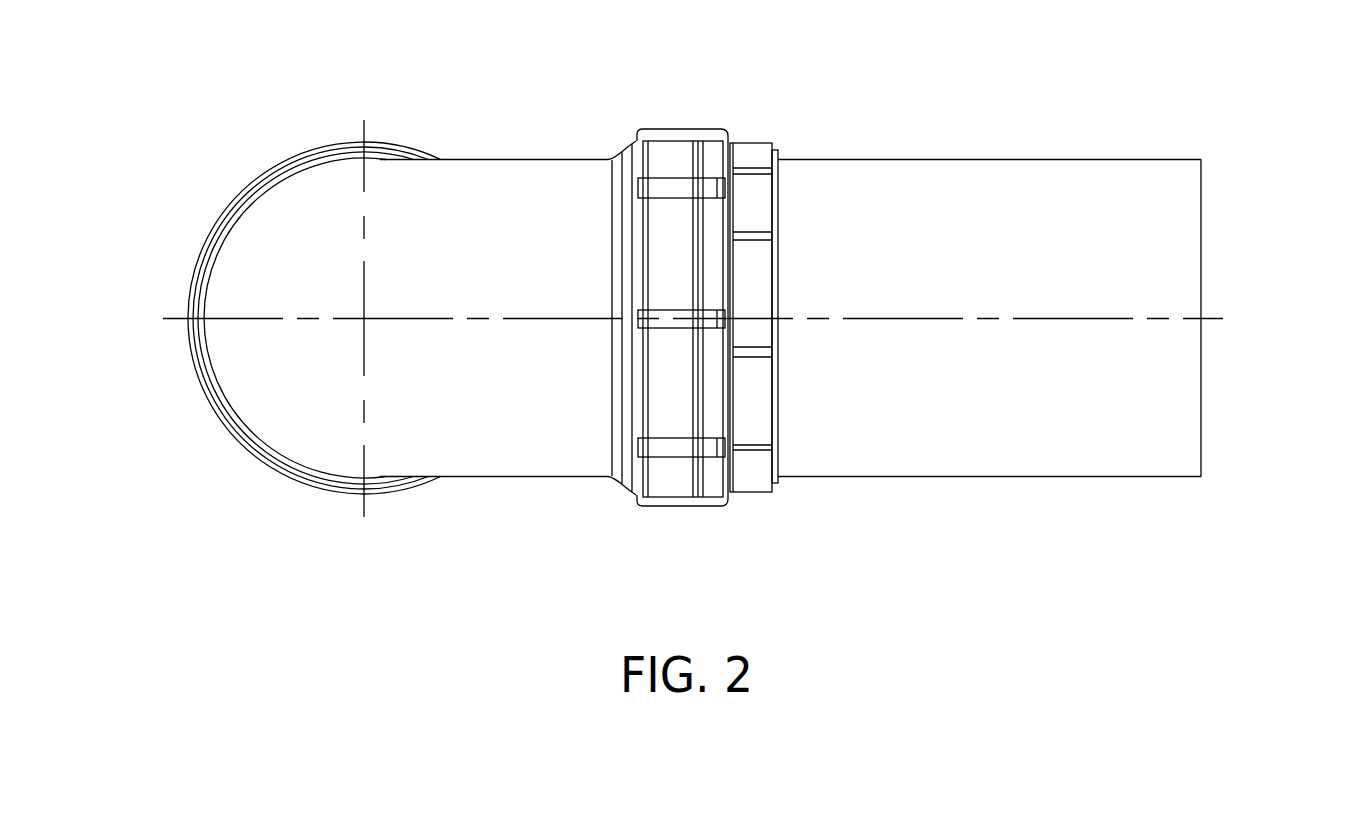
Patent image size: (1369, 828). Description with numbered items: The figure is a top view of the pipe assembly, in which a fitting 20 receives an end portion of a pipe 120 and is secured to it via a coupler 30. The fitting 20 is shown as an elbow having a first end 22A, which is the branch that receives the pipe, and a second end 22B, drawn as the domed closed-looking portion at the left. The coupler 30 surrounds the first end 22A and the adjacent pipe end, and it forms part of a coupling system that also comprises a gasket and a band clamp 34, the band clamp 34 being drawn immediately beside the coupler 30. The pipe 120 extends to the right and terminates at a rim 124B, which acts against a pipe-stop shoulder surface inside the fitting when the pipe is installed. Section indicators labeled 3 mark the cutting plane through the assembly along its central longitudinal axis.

The section line 3- 3 is at (118, 290).
The fitting 20 is at (469, 498).
The first end of fitting 22A is at (690, 244).
The second end of fitting 22B is at (283, 496).
The coupler 30 is at (738, 124).
The band clamp 34 is at (758, 512).
The pipe 120 is at (969, 470).
The rim 124B is at (1201, 444).